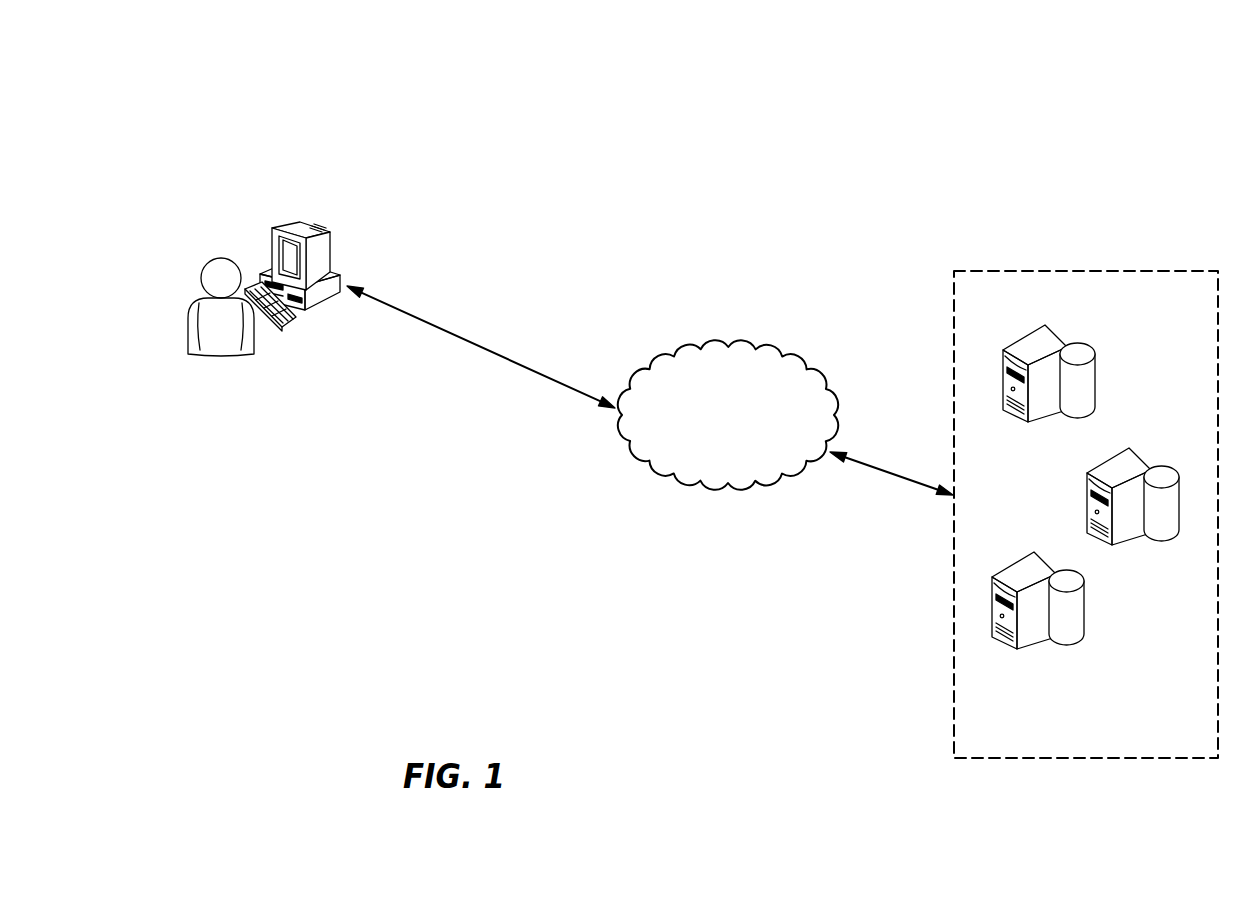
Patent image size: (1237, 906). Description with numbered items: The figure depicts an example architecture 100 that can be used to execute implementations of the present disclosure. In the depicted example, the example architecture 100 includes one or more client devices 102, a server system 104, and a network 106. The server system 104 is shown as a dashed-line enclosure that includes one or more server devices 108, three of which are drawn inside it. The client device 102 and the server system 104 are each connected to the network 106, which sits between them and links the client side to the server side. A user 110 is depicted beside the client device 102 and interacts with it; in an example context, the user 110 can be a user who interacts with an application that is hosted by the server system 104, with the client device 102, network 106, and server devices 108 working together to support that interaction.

The architecture 100 is at (572, 91).
The client device 102 is at (270, 232).
The server system 104 is at (1083, 270).
The network 106 is at (728, 340).
The server device 108 is at (1095, 360).
The user 110 is at (220, 355).